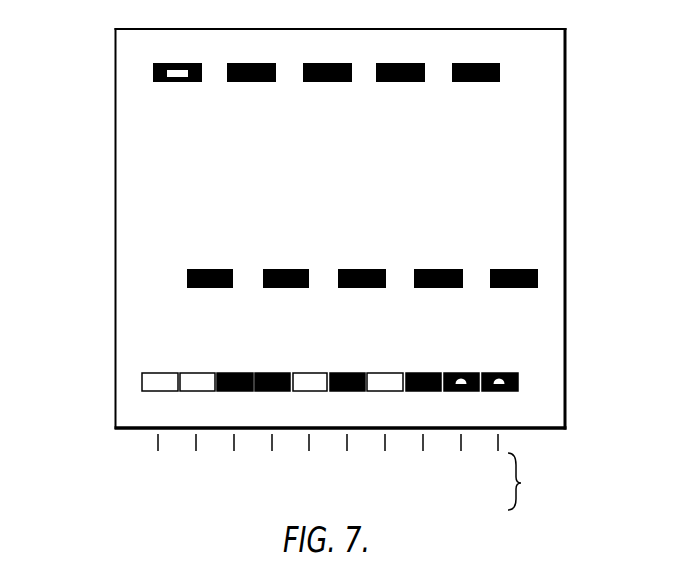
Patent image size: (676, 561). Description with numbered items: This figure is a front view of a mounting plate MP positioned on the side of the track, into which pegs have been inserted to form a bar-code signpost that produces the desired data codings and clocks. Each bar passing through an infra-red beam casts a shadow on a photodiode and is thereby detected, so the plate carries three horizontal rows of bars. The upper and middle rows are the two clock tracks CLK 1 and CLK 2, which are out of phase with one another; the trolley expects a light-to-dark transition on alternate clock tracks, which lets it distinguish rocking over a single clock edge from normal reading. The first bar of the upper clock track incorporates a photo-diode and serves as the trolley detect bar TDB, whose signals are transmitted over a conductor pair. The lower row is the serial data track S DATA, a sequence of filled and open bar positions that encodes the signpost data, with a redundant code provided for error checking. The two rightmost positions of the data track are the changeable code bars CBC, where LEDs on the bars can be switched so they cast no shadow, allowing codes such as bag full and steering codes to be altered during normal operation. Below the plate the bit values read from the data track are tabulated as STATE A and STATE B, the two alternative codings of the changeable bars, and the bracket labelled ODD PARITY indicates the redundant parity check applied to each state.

The clock track CLK 1 is at (153, 69).
The trolley detect bar TDB is at (179, 76).
The mounting plate MP is at (313, 214).
The clock track CLK 2 is at (187, 276).
The serial data track S DATA is at (142, 380).
The changeable code bars CBC is at (463, 377).
The state A bit values STATE A is at (267, 467).
The state B bit values STATE B is at (267, 495).
The odd parity indication ODD PARITY is at (576, 481).